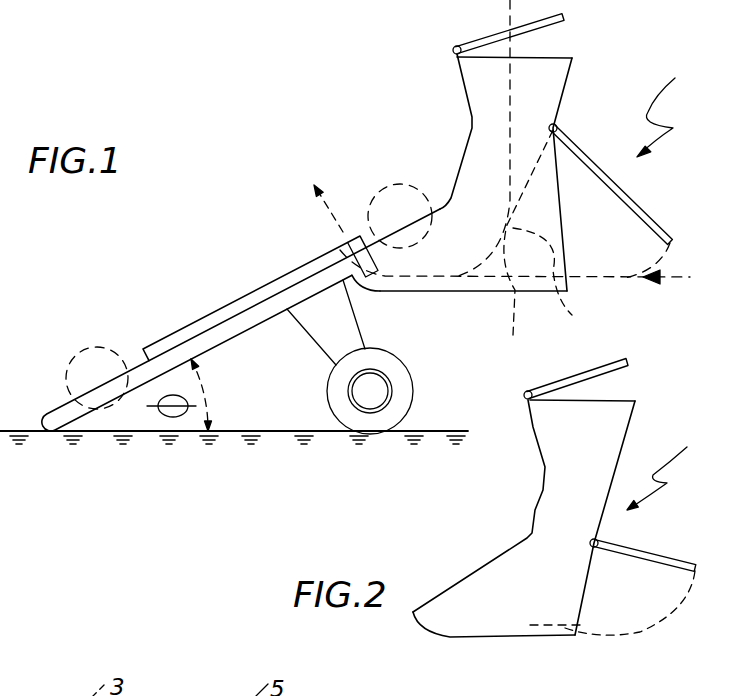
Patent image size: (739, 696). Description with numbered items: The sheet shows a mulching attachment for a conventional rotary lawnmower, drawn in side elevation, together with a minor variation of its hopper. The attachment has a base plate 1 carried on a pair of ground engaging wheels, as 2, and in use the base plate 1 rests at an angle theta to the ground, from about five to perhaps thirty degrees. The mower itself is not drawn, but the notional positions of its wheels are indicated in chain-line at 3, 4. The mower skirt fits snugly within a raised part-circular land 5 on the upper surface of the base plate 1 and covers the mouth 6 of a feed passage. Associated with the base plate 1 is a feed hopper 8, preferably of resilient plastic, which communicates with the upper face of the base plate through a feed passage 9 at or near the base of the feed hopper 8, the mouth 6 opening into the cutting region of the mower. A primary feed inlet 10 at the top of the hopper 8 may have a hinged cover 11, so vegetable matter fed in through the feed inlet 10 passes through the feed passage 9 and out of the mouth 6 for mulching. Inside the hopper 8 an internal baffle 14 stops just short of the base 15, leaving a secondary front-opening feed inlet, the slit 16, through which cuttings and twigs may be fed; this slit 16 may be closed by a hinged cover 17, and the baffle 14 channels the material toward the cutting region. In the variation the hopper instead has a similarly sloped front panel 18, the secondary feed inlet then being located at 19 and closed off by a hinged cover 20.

In FIG. 1, the base plate 1 is at (133, 360).
In FIG. 1, the ground engaging wheel 2 is at (348, 417).
In FIG. 1, the notional mower wheel position 3 is at (85, 350).
In FIG. 1, the notional mower wheel position 4 is at (384, 187).
In FIG. 1, the raised part-circular land 5 is at (233, 303).
In FIG. 1, the mouth 6 is at (345, 233).
In FIG. 1, the feed hopper 8 is at (560, 171).
In FIG. 2, the feed hopper 8 is at (557, 506).
In FIG. 1, the feed passage 9 is at (450, 267).
In FIG. 2, the feed passage 9 is at (443, 617).
In FIG. 1, the primary feed inlet 10 is at (530, 71).
In FIG. 1, the hinged cover 11 is at (552, 28).
In FIG. 2, the hinged cover 11 is at (584, 376).
In FIG. 1, the internal baffle 14 is at (556, 282).
In FIG. 1, the base 15 is at (500, 293).
In FIG. 1, the slit 16 is at (528, 245).
In FIG. 1, the hinged cover 17 is at (612, 181).
In FIG. 2, the sloped front panel 18 is at (630, 428).
In FIG. 2, the secondary feed inlet 19 is at (567, 637).
In FIG. 2, the hinged cover 20 is at (632, 551).